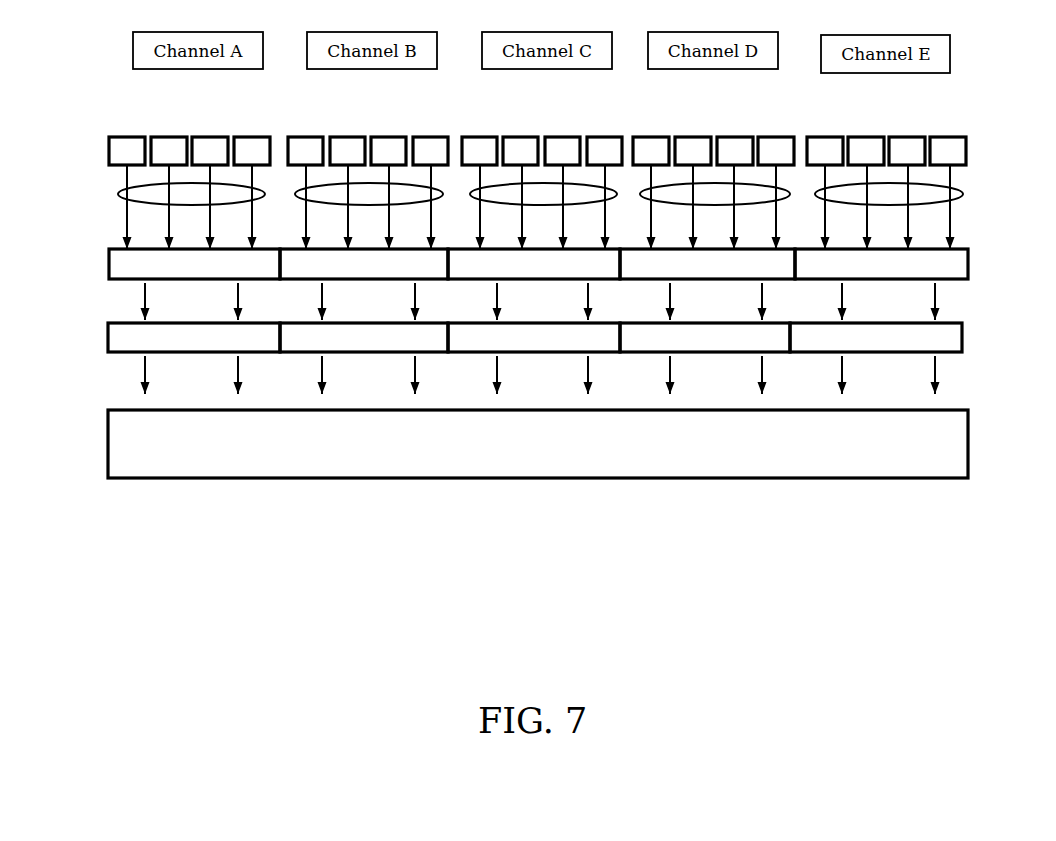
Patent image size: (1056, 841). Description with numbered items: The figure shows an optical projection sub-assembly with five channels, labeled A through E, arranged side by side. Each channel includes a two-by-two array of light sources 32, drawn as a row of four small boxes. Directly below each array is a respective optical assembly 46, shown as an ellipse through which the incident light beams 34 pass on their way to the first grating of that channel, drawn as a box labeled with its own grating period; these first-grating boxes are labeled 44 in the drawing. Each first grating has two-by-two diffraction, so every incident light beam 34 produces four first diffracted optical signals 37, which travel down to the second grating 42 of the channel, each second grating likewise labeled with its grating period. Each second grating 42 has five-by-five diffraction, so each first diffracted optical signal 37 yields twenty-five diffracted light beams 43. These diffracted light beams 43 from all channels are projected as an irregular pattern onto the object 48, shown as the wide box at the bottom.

The light sources 32 is at (109, 137).
The optical assembly 46 is at (118, 195).
The incident light beam 34 is at (127, 219).
The first data buffers 44 is at (109, 259).
The first diffracted optical signals 37 is at (140, 297).
The second grating 42 is at (108, 335).
The diffracted light beams 43 is at (140, 375).
The object 48 is at (968, 442).